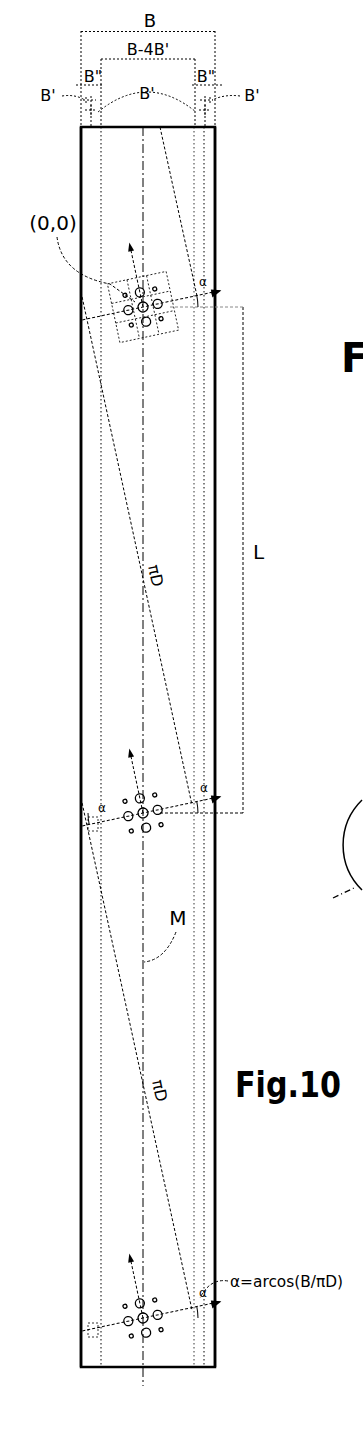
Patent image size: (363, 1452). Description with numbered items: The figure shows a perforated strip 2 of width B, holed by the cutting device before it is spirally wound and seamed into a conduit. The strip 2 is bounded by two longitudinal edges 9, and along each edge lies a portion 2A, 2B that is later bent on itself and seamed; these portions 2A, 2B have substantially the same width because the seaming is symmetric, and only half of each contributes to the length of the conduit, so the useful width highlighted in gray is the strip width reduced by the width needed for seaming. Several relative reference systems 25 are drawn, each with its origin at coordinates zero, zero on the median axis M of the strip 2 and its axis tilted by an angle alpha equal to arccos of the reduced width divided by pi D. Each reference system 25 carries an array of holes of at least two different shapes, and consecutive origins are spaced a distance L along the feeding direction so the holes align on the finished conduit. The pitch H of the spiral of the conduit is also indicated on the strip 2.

The strip 2 is at (148, 756).
The portion of the strip 2A is at (202, 203).
The portion of the strip 2B is at (92, 170).
The longitudinal edges 9 is at (80, 455).
The relative reference system 25 is at (238, 1333).
The pitch of the spiral H is at (66, 290).